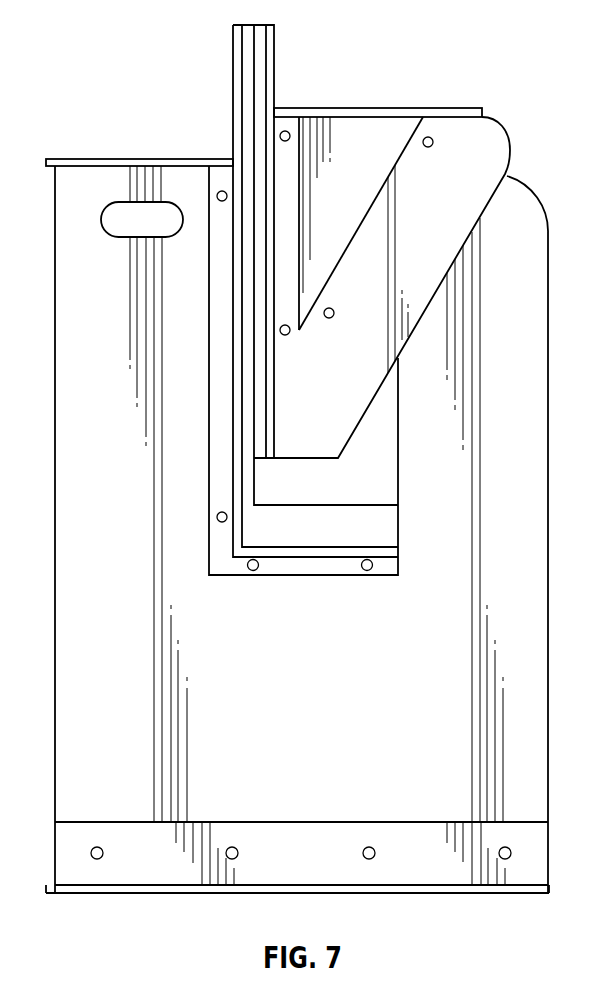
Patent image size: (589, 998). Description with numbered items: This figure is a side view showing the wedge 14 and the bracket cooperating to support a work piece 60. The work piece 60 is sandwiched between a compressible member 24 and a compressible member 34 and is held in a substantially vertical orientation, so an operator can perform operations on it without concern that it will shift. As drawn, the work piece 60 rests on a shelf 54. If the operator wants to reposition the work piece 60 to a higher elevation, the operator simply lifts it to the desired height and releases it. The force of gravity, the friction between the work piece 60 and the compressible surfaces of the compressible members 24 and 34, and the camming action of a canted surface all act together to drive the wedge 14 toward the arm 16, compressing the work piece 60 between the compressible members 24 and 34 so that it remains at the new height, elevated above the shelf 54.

The wedge 14 is at (450, 134).
The arm 16 is at (75, 537).
The compressible member 24 is at (238, 321).
The compressible member 34 is at (270, 212).
The shelf 54 is at (360, 505).
The work piece 60 is at (255, 58).